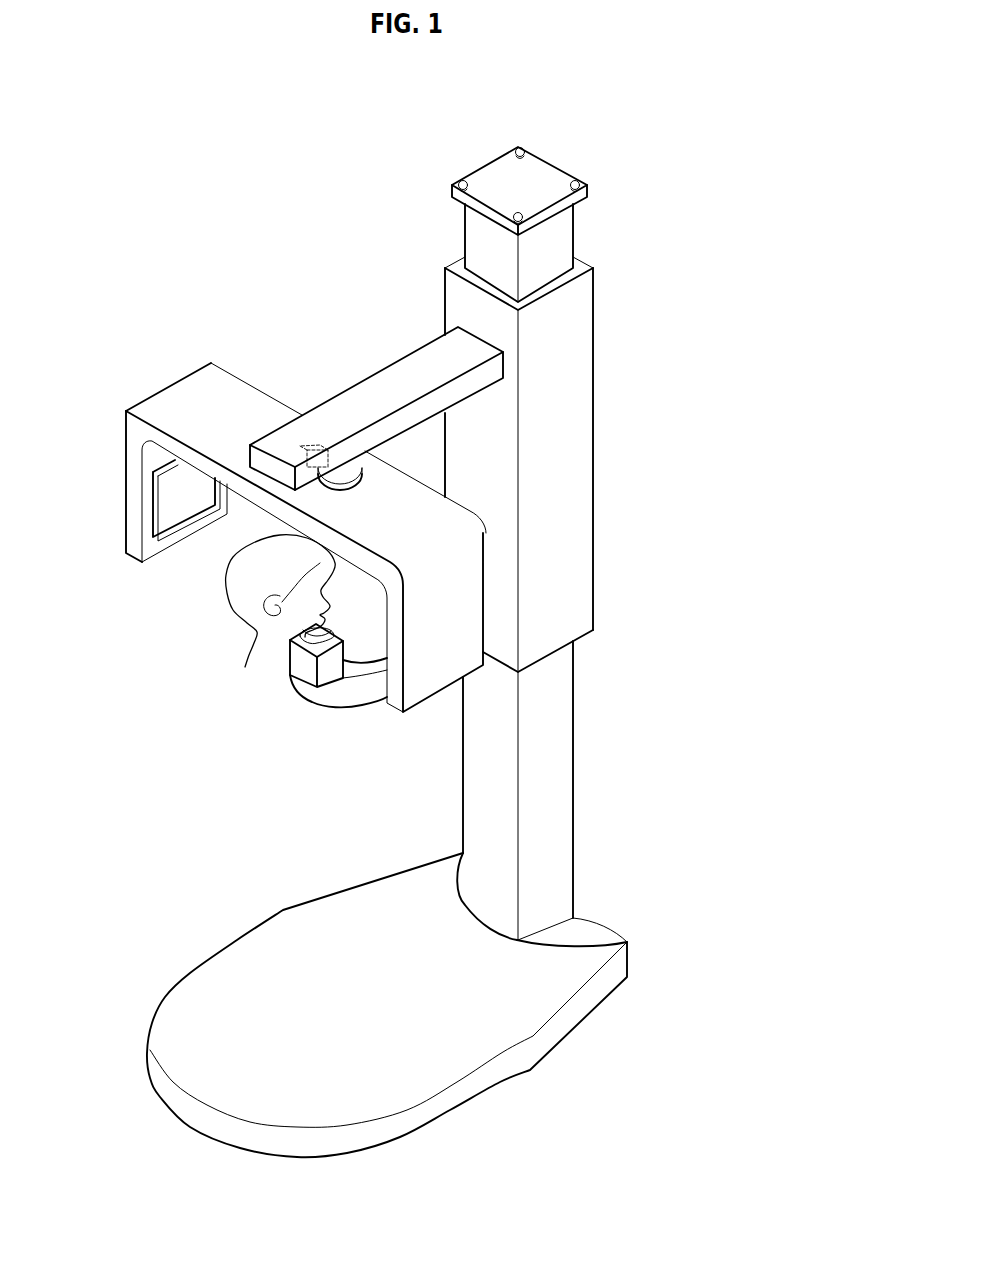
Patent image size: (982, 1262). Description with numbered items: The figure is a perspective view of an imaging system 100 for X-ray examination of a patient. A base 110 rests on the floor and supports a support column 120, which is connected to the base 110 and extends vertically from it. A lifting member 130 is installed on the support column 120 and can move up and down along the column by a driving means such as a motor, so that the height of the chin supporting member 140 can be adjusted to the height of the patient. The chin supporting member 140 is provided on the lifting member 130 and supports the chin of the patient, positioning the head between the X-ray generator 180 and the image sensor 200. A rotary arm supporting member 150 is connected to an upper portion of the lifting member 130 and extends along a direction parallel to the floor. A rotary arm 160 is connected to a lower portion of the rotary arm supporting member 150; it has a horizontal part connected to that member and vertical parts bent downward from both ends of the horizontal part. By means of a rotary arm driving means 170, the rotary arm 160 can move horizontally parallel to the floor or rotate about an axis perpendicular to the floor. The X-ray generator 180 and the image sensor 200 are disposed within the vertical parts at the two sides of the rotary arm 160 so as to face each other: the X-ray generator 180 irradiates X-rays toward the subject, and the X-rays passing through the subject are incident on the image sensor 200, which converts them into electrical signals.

The imaging system 100 is at (208, 276).
The base 110 is at (235, 1003).
The support column 120 is at (552, 788).
The lifting member 130 is at (568, 413).
The chin supporting member 140 is at (305, 667).
The rotary arm supporting member 150 is at (385, 390).
The rotary arm 160 is at (463, 588).
The rotary arm driving means 170 is at (330, 463).
The X-ray generator 180 is at (383, 677).
The image sensor 200 is at (173, 517).